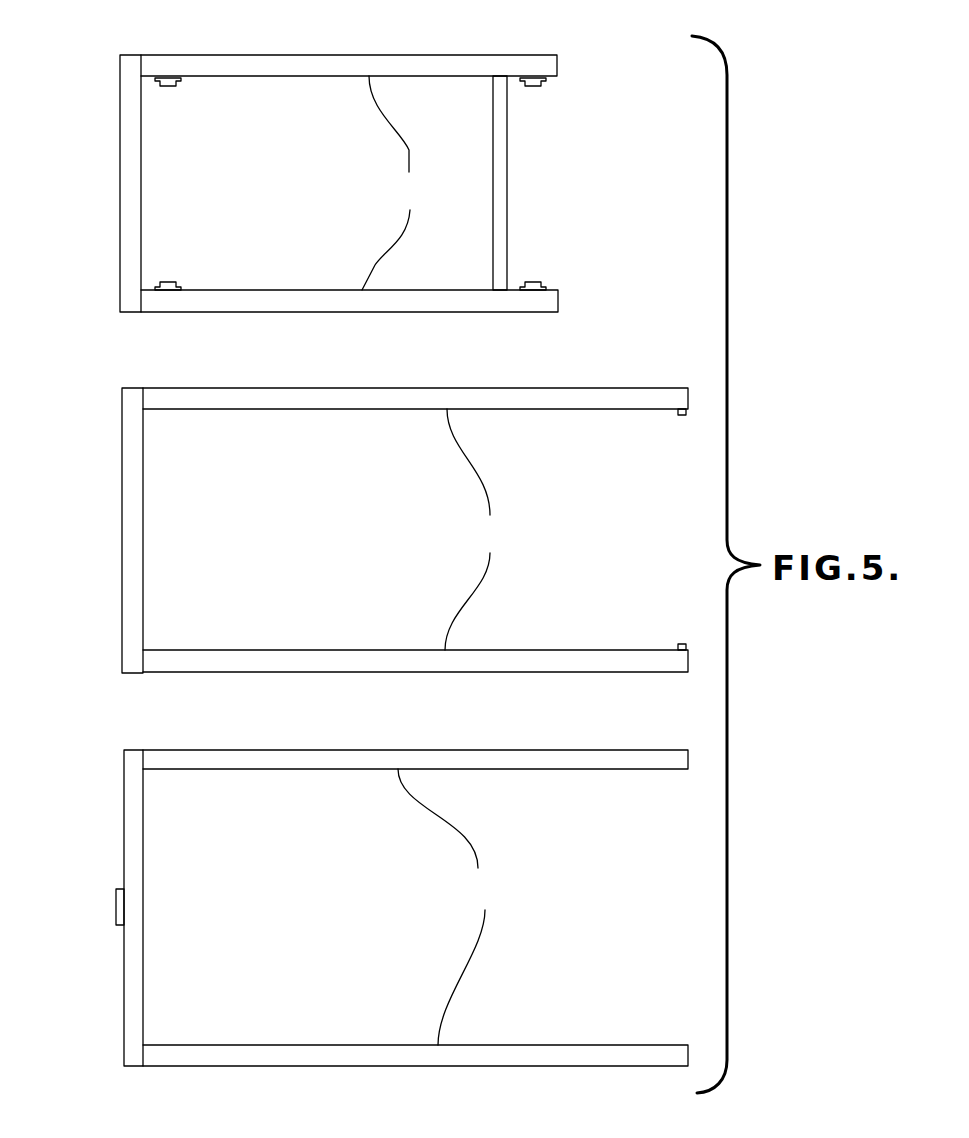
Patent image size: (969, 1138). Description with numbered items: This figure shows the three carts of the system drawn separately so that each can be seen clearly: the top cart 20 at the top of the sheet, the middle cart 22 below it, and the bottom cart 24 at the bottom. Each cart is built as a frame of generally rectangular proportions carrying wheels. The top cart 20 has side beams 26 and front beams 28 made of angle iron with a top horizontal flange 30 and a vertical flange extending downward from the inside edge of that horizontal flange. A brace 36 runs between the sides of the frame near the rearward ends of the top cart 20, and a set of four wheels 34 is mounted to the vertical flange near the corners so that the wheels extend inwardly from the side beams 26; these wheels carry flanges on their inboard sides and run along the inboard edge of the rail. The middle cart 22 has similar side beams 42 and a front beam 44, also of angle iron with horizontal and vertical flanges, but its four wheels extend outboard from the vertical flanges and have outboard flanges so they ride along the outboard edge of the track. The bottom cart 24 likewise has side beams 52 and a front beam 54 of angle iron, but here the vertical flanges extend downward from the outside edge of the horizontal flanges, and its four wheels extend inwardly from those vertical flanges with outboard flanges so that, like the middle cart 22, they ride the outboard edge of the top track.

The top cart 20 is at (347, 183).
The middle cart 22 is at (405, 530).
The bottom cart 24 is at (402, 908).
The side beams 26 is at (393, 183).
The front beams 28 is at (141, 170).
The top horizontal flange 30 is at (120, 152).
The wheels 34 is at (530, 87).
The brace 36 is at (508, 163).
The side beams 42 is at (476, 529).
The front beam 44 is at (143, 560).
The side beams 52 is at (448, 907).
The front beam 54 is at (143, 875).